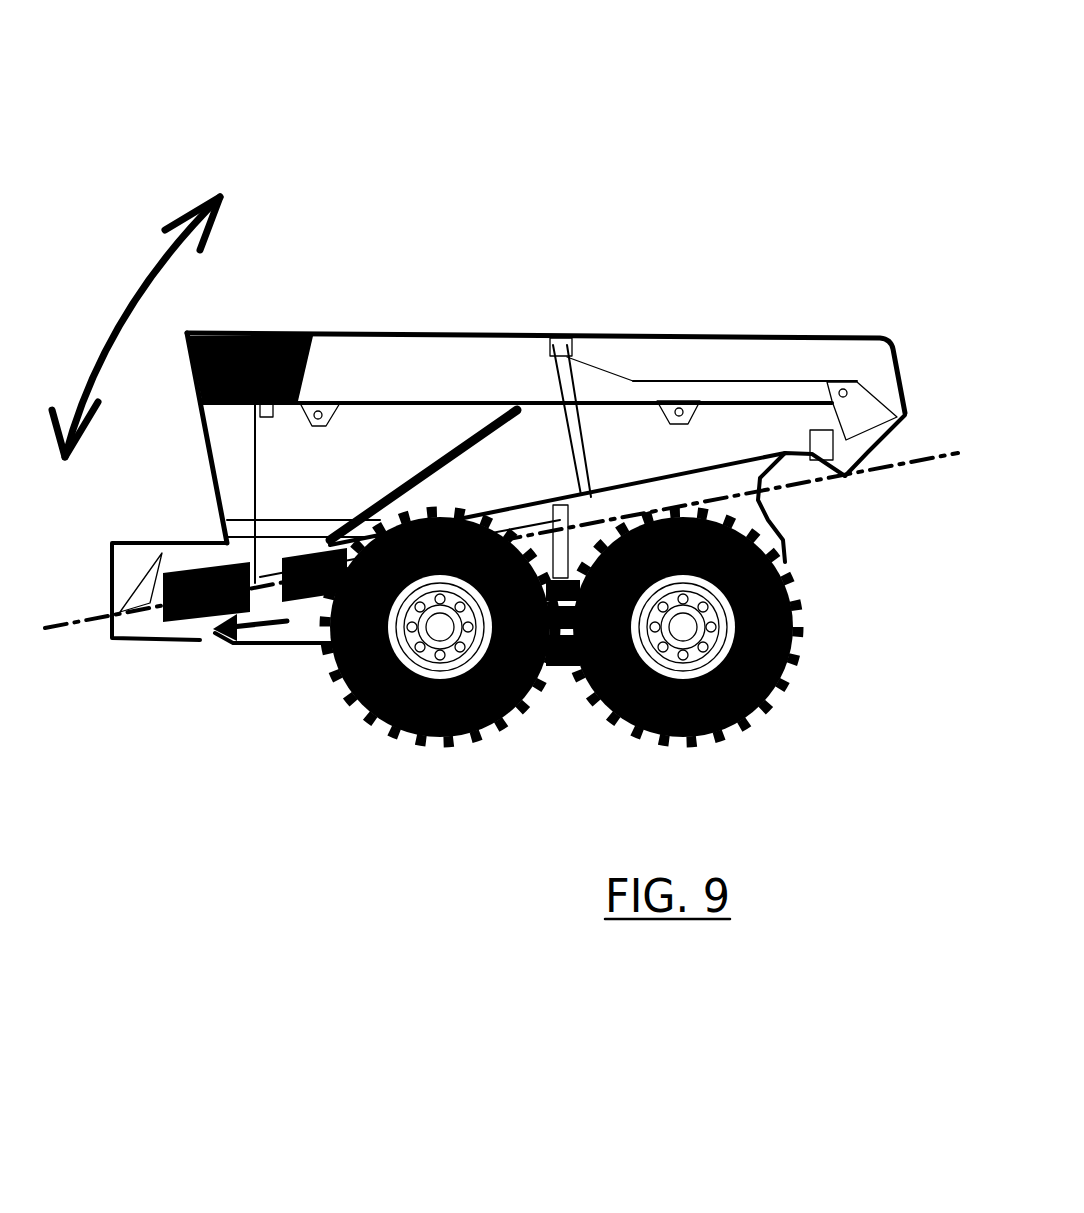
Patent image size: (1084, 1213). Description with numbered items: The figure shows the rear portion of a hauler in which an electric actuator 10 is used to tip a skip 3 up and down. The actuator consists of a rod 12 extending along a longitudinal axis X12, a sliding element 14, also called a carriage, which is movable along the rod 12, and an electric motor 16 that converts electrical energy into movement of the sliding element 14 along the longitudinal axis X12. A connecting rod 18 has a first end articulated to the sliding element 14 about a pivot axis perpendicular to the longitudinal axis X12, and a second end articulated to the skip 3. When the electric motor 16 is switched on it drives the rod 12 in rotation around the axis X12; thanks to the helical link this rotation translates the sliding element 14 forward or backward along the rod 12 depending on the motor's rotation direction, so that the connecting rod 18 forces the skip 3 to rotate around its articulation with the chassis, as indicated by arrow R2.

The skip 3 is at (417, 363).
The electric actuator 10 is at (358, 883).
The rod 12 is at (453, 502).
The sliding element 14 is at (327, 585).
The electric motor 16 is at (189, 607).
The connecting rod 18 is at (417, 468).
The longitudinal axis X12 is at (937, 462).
The arrow R2 is at (136, 327).